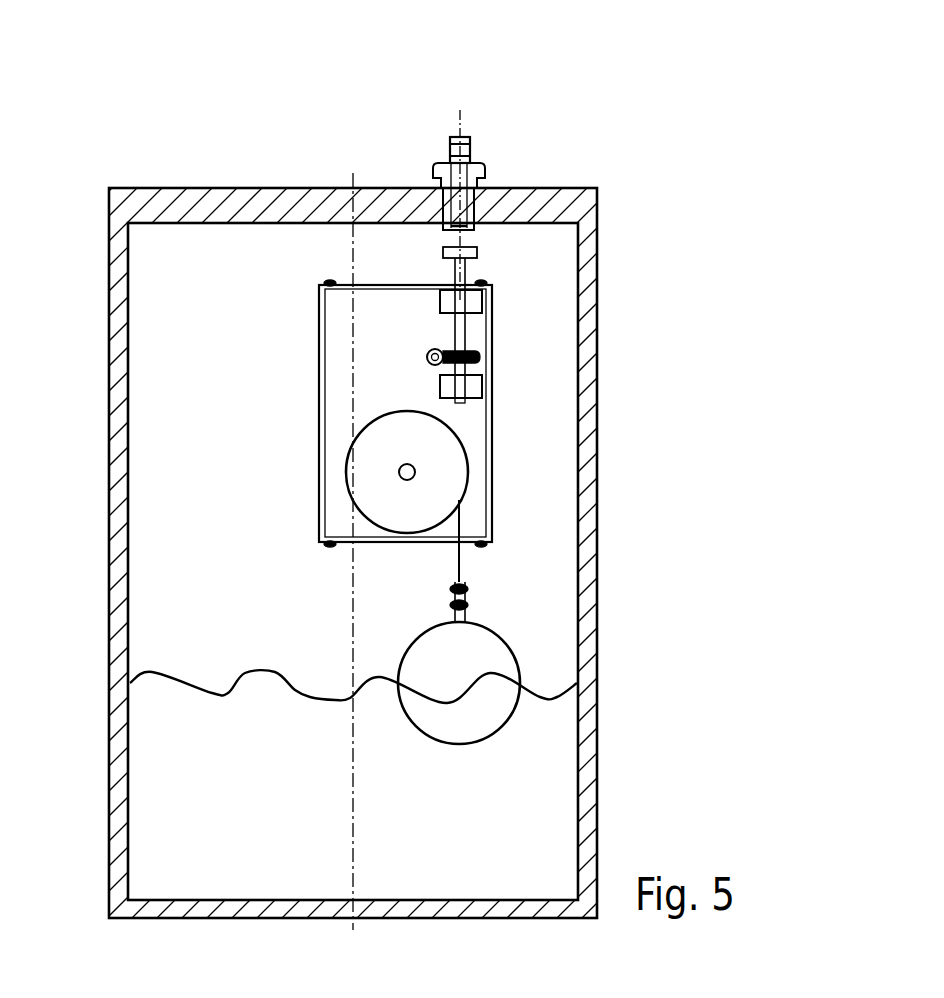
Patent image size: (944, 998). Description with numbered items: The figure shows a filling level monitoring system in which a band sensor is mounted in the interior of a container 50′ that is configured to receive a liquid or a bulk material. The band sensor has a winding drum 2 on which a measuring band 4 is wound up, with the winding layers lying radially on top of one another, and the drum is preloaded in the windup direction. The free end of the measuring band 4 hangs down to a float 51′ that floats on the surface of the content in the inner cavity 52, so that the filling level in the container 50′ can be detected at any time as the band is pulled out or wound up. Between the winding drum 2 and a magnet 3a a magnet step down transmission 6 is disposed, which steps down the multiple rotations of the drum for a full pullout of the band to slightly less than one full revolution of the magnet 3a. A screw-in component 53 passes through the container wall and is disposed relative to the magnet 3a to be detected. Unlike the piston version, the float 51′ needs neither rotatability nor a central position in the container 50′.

The winding drum 2 is at (407, 410).
The screw-in component 53 is at (478, 153).
The container 50′ is at (597, 230).
The magnet 3a is at (477, 252).
The magnet step down transmission 6 is at (467, 333).
The inner cavity 52 is at (353, 604).
The measuring band 4 is at (460, 563).
The float 51′ is at (518, 655).